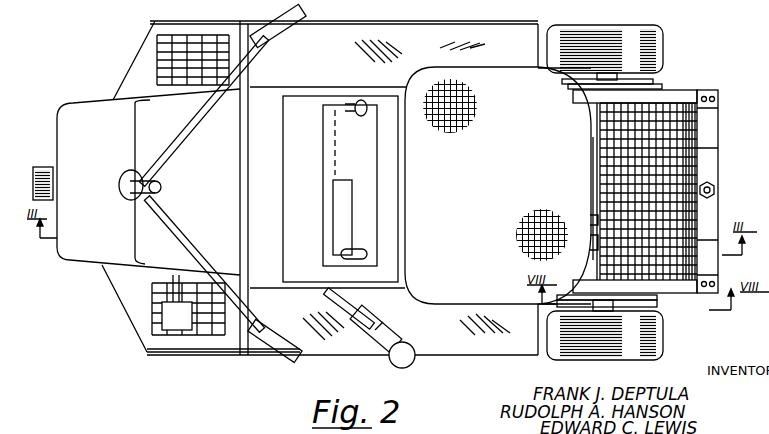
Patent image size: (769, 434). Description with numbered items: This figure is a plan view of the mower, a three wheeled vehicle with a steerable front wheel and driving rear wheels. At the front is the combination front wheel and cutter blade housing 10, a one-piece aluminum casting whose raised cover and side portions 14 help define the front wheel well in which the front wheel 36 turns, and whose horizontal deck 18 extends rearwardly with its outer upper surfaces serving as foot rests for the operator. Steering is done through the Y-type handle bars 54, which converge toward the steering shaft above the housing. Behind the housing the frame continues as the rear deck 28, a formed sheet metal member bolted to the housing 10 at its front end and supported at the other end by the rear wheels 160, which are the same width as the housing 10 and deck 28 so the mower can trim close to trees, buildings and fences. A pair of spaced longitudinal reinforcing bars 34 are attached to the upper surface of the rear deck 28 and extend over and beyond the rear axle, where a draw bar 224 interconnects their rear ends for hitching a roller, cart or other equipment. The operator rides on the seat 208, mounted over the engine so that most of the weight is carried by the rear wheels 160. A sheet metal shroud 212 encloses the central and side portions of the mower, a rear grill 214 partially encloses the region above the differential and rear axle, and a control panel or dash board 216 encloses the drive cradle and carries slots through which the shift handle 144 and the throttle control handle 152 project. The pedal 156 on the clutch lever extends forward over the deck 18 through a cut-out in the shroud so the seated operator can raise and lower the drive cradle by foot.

The combination front wheel and cutter blade housing 10 is at (168, 356).
The raised cover and side portions 14 is at (80, 256).
The horizontal deck 18 is at (136, 75).
The rear deck 28 is at (460, 357).
The longitudinal reinforcing bars 34 is at (667, 195).
The front wheel 36 is at (44, 166).
The handle bars 54 is at (207, 118).
The handle 144 is at (359, 248).
The throttle control handle 152 is at (358, 118).
The pedal 156 is at (168, 310).
The rear wheels 160 is at (585, 28).
The seat 208 is at (498, 185).
The sheet metal shroud 212 is at (165, 185).
The rear grill 214 is at (690, 214).
The control panel or dash board 216 is at (340, 189).
The draw bar 224 is at (720, 168).